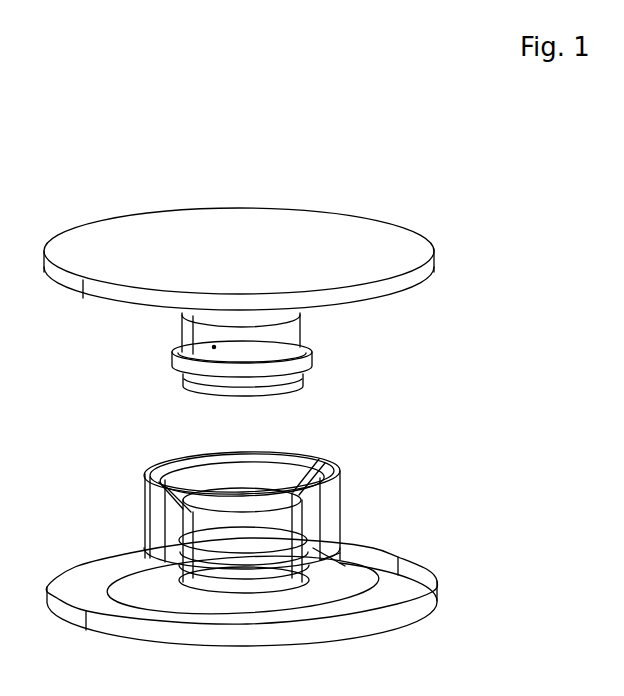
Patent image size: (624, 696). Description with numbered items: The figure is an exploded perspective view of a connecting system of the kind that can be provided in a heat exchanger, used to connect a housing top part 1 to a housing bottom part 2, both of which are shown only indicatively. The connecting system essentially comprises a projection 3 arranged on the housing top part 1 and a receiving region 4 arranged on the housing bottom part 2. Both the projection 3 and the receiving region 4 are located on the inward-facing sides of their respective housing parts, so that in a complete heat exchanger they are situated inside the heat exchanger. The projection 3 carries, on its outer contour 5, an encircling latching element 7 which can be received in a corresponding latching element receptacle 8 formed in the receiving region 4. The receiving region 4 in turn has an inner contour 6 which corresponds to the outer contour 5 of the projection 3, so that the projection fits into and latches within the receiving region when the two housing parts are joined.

The housing top part 1 is at (378, 246).
The housing bottom part 2 is at (385, 610).
The projection 3 is at (296, 340).
The receiving region 4 is at (333, 513).
The outer contour 5 is at (213, 348).
The inner contour 6 is at (190, 464).
The latching element 7 is at (304, 360).
The latching element receptacle 8 is at (164, 560).